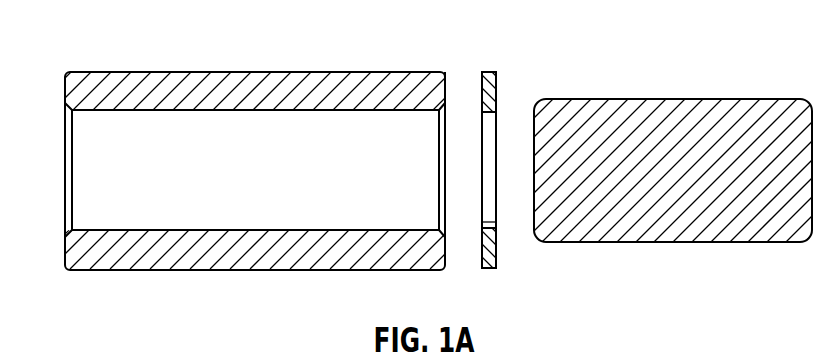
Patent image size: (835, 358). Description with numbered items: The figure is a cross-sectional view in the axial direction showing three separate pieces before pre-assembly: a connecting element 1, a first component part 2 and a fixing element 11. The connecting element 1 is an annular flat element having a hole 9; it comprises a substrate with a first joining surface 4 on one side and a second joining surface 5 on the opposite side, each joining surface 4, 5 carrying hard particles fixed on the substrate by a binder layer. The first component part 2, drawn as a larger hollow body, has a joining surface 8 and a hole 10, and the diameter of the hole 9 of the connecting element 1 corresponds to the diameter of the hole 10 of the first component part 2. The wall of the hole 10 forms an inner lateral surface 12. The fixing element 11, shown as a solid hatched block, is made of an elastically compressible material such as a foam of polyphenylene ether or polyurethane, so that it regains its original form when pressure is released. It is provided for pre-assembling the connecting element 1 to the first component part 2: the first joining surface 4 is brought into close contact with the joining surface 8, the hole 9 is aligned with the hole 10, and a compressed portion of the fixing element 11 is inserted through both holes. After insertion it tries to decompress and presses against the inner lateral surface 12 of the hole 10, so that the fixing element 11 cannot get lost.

The connecting element 1 is at (490, 71).
The first component part 2 is at (152, 80).
The first joining surface 4 is at (482, 262).
The second joining surface 5 is at (497, 91).
The joining surface 8 is at (448, 89).
The hole 9 is at (490, 222).
The hole 10 is at (82, 140).
The fixing element 11 is at (663, 105).
The inner lateral surface 12 is at (86, 229).